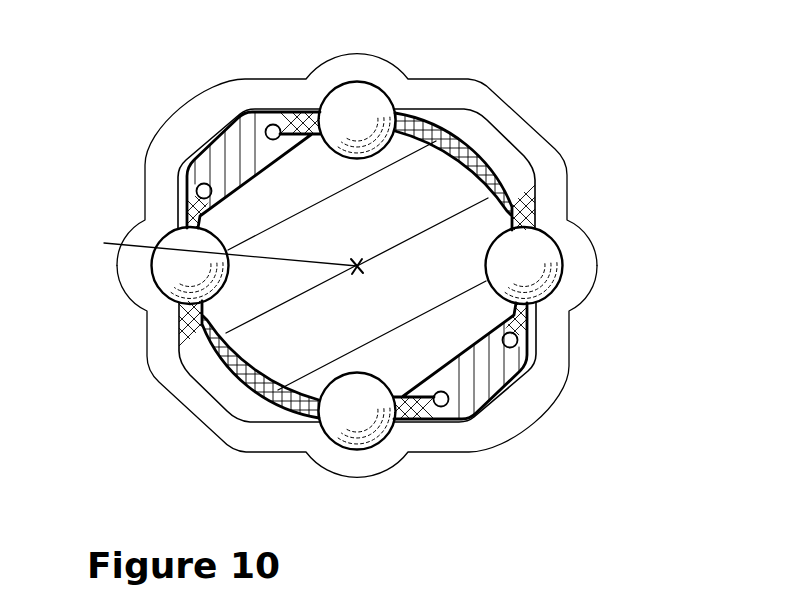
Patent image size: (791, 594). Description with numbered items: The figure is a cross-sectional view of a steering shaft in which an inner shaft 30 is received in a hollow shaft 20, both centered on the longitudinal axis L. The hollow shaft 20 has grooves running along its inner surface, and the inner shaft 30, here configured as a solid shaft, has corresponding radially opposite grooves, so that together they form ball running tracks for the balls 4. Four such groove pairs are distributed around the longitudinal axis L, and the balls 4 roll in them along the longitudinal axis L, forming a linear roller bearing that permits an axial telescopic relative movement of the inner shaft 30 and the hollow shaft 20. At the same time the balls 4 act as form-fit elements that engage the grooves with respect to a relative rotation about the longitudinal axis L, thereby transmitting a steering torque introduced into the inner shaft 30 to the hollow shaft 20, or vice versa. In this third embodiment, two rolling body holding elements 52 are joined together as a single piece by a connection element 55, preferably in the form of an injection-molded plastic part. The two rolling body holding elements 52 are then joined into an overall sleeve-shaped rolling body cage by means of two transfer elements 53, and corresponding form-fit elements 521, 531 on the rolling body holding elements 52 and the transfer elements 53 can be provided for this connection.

The hollow shaft 20 is at (458, 97).
The inner shaft 30 is at (220, 163).
The balls 4 is at (357, 116).
The connection element 55 is at (490, 156).
The transfer element 53 is at (190, 152).
The form-fit element 531 is at (300, 193).
The rolling body holding element 52 is at (290, 118).
The form-fit element 521 is at (196, 189).
The longitudinal axis L is at (219, 247).